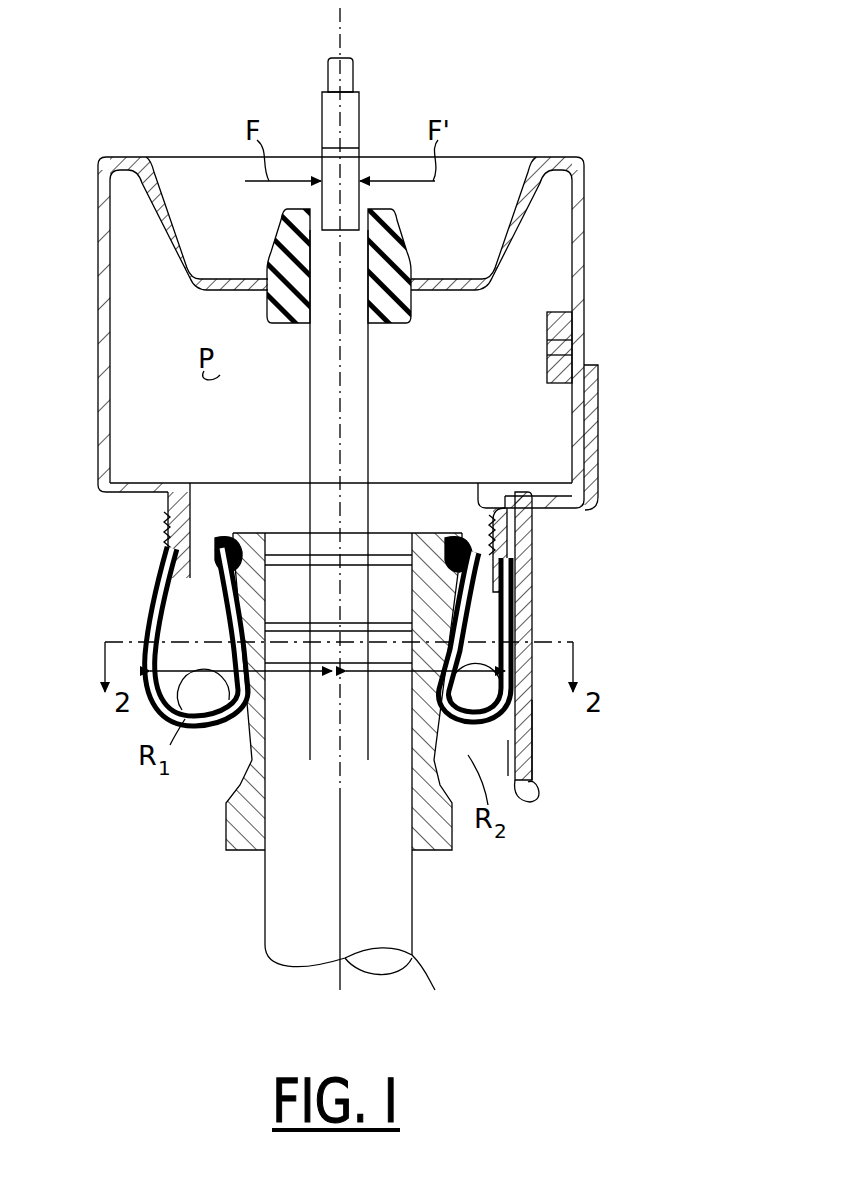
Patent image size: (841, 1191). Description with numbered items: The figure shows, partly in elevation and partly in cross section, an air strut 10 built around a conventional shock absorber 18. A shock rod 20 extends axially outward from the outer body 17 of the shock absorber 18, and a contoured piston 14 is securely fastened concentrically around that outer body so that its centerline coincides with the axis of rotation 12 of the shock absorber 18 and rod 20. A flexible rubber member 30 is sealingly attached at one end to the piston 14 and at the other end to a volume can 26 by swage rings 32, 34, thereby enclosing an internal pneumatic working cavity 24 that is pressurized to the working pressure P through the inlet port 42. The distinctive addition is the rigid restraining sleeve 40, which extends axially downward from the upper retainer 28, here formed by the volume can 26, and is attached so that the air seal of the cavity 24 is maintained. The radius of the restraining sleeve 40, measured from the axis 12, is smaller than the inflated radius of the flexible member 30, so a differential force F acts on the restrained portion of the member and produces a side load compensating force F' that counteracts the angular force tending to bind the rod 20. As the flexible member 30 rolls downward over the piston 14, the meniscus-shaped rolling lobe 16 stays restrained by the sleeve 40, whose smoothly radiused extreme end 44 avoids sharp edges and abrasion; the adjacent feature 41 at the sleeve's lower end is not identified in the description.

The air strut 10 is at (622, 140).
The axis of rotation 12 is at (345, 27).
The piston 14 is at (450, 726).
The meniscus-shaped rolling lobe 16 is at (522, 768).
The outer body 17 is at (412, 972).
The shock absorber 18 is at (265, 885).
The shock rod 20 is at (360, 402).
The internal pneumatic working cavity 24 is at (555, 412).
The volume can 26 is at (583, 227).
The upper retainer 28 is at (486, 506).
The flexible rubber member 30 is at (532, 594).
The swage ring 32 is at (530, 526).
The swage ring 34 is at (215, 565).
The rigid restraining sleeve 40 is at (536, 735).
The bellows end 41 is at (508, 778).
The inlet port 42 is at (575, 347).
The extreme circumferential end 44 is at (538, 797).